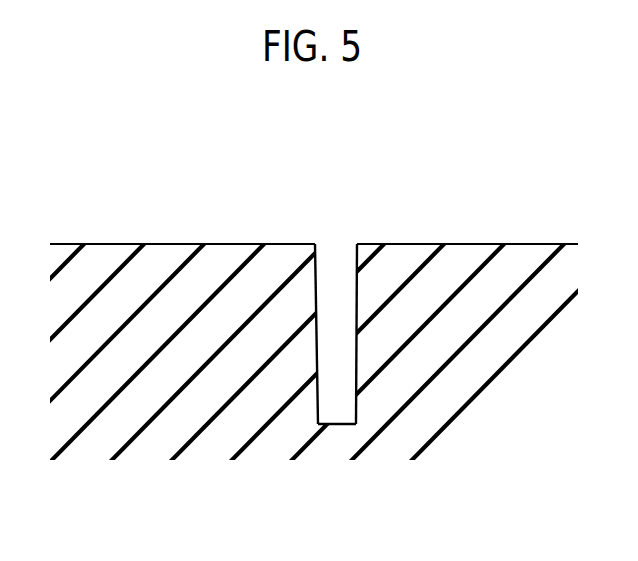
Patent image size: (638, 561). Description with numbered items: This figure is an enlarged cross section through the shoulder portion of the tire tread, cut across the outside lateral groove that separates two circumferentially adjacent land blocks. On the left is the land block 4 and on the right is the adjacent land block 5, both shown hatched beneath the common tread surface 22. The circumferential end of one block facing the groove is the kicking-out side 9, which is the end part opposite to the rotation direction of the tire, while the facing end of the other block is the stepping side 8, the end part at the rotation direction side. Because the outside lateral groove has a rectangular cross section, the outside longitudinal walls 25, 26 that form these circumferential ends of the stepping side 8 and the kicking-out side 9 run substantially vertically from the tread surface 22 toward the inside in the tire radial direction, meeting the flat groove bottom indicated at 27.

The land block 4 is at (171, 243).
The adjacent land block 5 is at (488, 243).
The tread surface 22 is at (237, 244).
The kicking-out side 9 is at (291, 253).
The stepping side 8 is at (368, 253).
The outside longitudinal wall 26 is at (318, 358).
The outside longitudinal wall 25 is at (357, 320).
The bottom of groove 27 is at (325, 424).